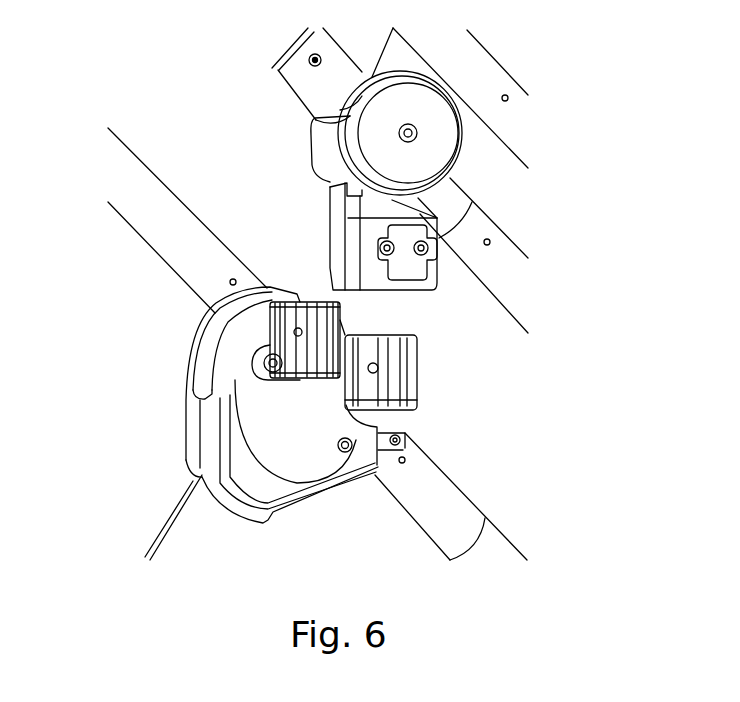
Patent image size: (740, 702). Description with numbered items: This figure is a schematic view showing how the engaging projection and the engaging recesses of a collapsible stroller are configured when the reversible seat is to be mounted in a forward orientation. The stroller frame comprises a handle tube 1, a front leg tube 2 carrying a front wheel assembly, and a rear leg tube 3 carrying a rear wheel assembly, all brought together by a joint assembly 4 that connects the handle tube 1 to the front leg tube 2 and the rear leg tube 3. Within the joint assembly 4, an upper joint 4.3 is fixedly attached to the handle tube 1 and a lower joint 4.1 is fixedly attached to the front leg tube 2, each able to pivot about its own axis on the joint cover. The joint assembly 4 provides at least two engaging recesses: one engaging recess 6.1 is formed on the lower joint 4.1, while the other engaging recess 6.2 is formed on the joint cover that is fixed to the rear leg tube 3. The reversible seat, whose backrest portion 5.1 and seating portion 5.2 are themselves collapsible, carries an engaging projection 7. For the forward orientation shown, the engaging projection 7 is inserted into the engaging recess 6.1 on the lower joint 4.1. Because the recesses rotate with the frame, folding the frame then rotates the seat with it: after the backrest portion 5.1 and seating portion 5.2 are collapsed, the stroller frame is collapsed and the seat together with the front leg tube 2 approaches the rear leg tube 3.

The handle tube 1 is at (171, 248).
The front leg tube 2 is at (430, 507).
The rear leg tube 3 is at (171, 555).
The joint assembly 4 is at (296, 433).
The lower joint 4.1 is at (400, 450).
The upper joint 4.3 is at (226, 325).
The backrest portion 5.1 is at (258, 35).
The seating portion 5.2 is at (482, 233).
The engaging recess 6.1 is at (378, 357).
The engaging recess 6.2 is at (313, 342).
The engaging projection 7 is at (430, 265).